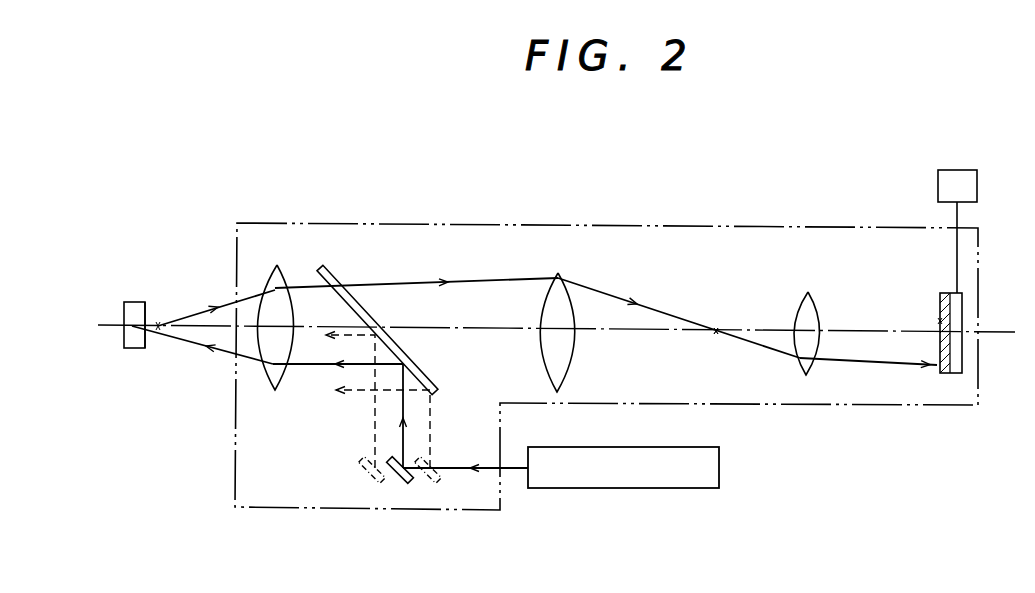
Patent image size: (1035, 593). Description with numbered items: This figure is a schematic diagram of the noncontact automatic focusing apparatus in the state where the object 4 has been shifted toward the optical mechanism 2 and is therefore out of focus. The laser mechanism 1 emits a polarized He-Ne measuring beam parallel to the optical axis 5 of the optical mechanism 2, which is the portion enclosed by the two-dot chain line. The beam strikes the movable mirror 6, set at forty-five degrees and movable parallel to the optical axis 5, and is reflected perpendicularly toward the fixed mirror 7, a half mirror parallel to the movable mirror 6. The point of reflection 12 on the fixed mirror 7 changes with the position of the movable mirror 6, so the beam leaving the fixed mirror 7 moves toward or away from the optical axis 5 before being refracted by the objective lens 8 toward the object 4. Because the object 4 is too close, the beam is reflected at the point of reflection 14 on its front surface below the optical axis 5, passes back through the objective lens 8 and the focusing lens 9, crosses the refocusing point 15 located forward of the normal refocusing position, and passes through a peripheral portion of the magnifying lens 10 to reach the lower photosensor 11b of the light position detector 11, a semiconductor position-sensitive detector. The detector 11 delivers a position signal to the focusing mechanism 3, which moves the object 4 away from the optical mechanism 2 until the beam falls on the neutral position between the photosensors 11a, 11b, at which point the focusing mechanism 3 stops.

The laser mechanism 1 is at (678, 488).
The optical mechanism 2 is at (718, 226).
The focusing mechanism 3 is at (958, 171).
The object 4 is at (128, 348).
The optical axis 5 is at (478, 330).
The movable mirror 6 is at (402, 483).
The fixed mirror 7 is at (334, 280).
The objective lens 8 is at (273, 267).
The focusing lens 9 is at (558, 273).
The magnifying lens 10 is at (810, 300).
The light position detector 11 is at (964, 302).
The photosensor 11a is at (940, 303).
The photosensor 11b is at (942, 375).
The point of reflection 12 is at (405, 362).
The point of reflection 14 is at (145, 332).
The refocusing point 15 is at (716, 334).